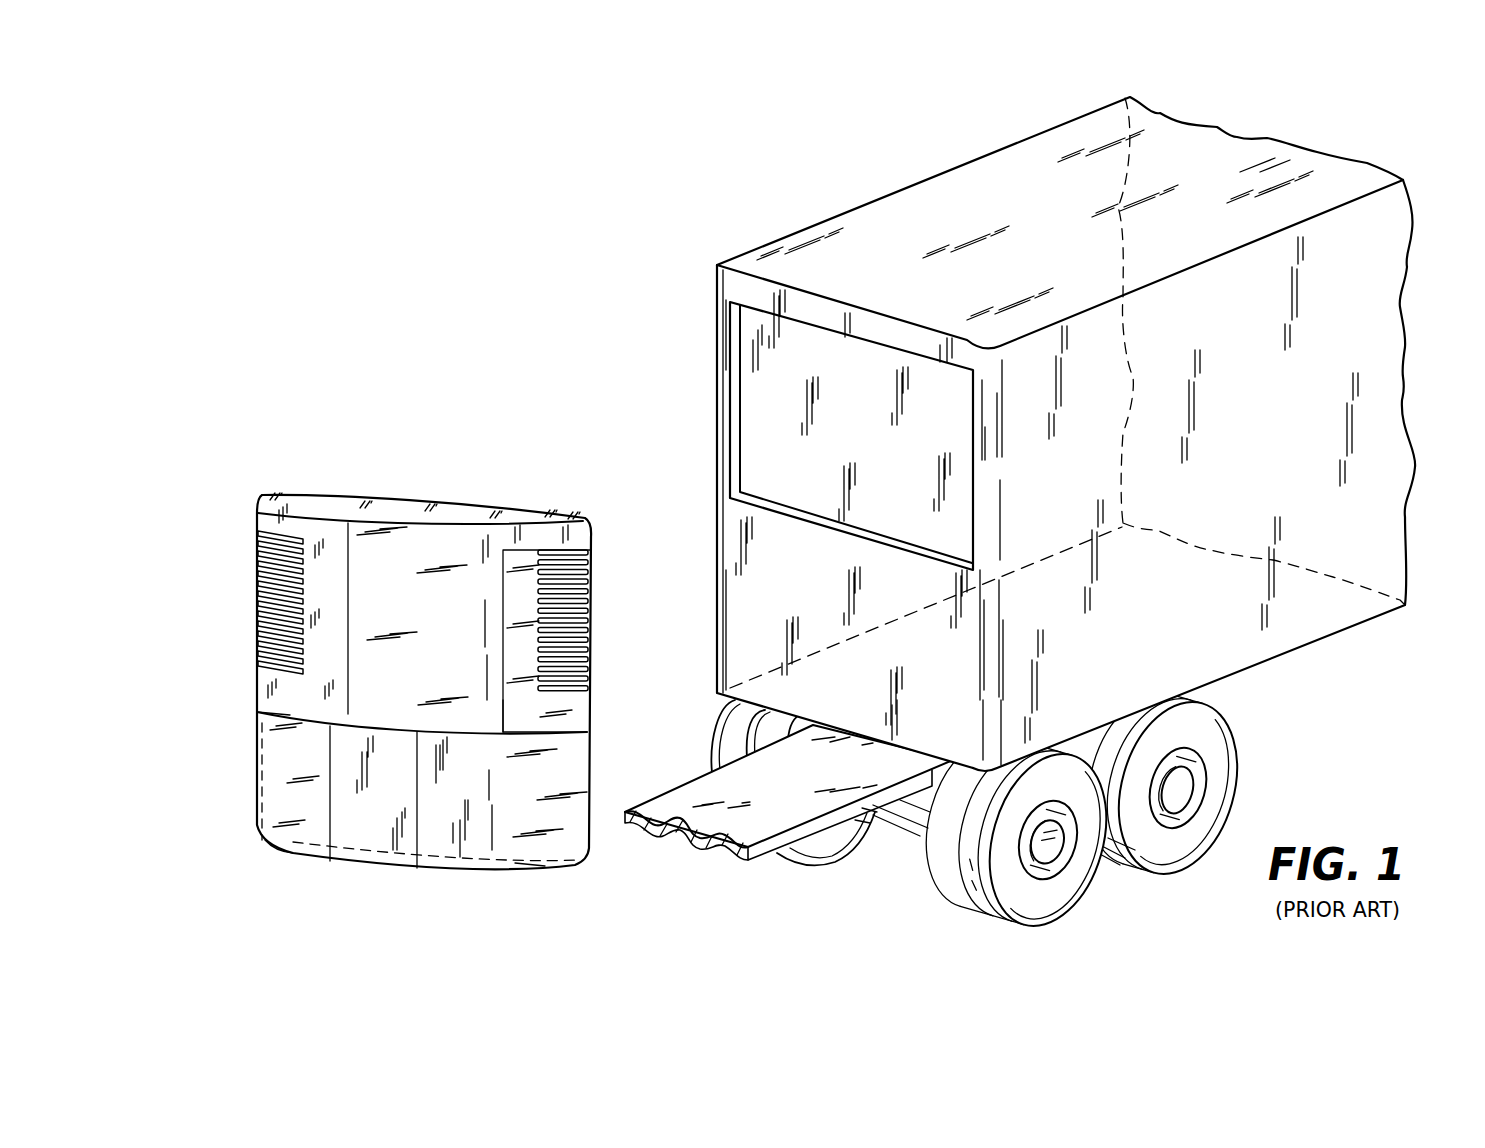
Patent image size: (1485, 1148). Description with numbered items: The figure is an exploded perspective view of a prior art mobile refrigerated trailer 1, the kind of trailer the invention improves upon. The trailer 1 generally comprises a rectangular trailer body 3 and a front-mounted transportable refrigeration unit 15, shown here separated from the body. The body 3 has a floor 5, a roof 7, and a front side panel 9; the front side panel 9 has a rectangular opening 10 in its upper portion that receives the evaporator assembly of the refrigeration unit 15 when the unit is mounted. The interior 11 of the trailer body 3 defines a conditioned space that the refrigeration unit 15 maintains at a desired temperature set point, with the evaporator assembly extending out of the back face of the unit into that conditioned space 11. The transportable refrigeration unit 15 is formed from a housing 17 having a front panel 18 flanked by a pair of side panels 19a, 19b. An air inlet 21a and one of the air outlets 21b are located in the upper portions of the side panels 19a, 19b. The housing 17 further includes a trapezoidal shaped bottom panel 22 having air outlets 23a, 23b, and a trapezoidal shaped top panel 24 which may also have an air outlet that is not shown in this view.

The mobile refrigerated trailer 1 is at (855, 160).
The trailer body 3 is at (927, 163).
The floor 5 is at (1218, 653).
The roof 7 is at (1232, 147).
The front side panel 9 is at (748, 552).
The rectangular opening 10 is at (728, 343).
The interior 11 is at (862, 441).
The transportable refrigeration unit 15 is at (410, 482).
The housing 17 is at (348, 799).
The front panel 18 is at (434, 617).
The side panel 19a is at (578, 713).
The side panel 19b is at (256, 691).
The air inlet 21a is at (600, 548).
The air outlet 21b is at (246, 670).
The bottom panel 22 is at (437, 862).
The air outlet 23a is at (527, 865).
The air outlet 23b is at (287, 855).
The top panel 24 is at (468, 512).